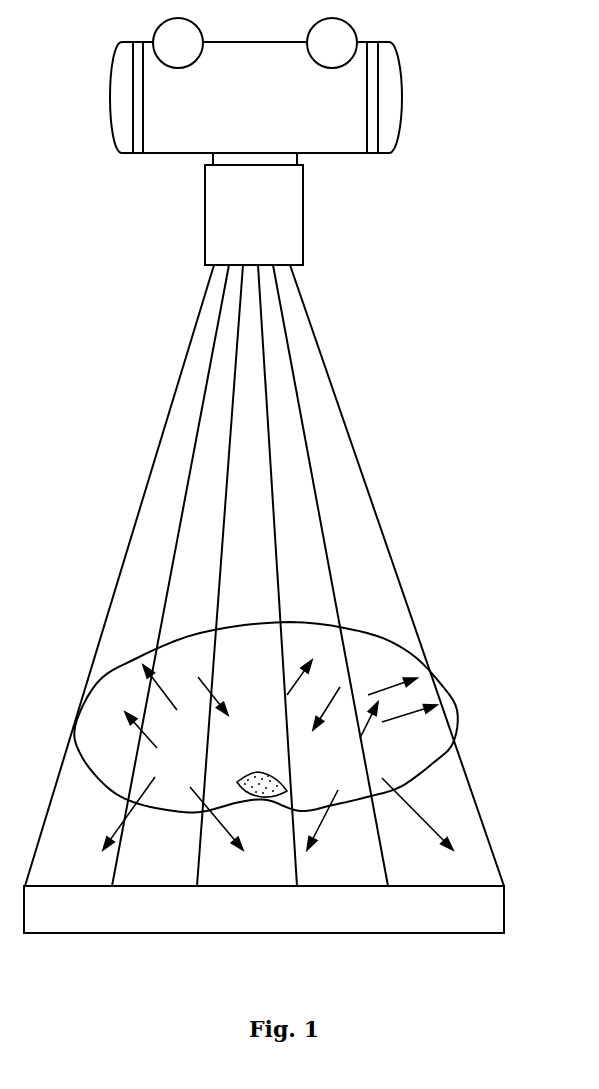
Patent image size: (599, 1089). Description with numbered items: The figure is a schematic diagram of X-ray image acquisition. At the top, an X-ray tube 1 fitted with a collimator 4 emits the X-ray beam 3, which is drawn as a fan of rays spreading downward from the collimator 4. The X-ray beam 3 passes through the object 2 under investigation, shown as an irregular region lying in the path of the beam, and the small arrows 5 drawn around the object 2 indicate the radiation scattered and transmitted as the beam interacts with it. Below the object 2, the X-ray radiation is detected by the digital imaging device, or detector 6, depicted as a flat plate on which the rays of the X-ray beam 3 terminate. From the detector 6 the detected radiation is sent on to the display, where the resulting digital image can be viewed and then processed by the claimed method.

The X-ray tube 1 is at (385, 85).
The object 2 is at (363, 662).
The X-ray beam 3 is at (345, 520).
The collimator 4 is at (293, 230).
The scattered light arrows 5 is at (396, 792).
The digital imaging device (detector) 6 is at (443, 900).